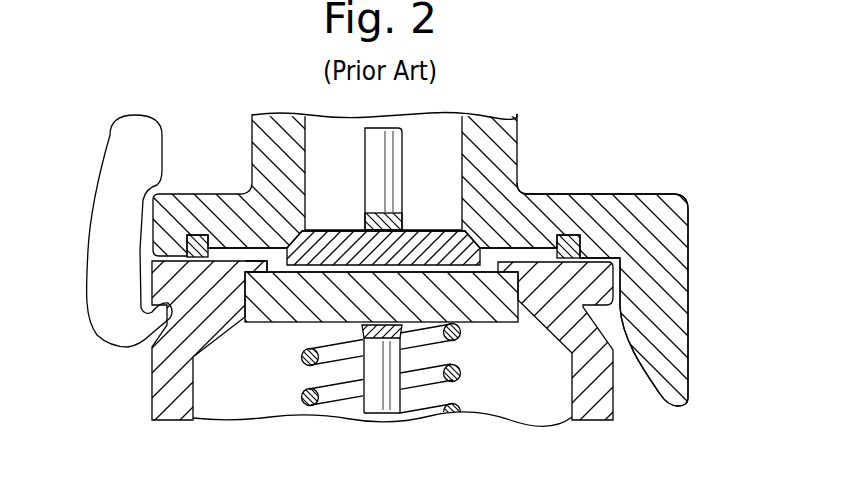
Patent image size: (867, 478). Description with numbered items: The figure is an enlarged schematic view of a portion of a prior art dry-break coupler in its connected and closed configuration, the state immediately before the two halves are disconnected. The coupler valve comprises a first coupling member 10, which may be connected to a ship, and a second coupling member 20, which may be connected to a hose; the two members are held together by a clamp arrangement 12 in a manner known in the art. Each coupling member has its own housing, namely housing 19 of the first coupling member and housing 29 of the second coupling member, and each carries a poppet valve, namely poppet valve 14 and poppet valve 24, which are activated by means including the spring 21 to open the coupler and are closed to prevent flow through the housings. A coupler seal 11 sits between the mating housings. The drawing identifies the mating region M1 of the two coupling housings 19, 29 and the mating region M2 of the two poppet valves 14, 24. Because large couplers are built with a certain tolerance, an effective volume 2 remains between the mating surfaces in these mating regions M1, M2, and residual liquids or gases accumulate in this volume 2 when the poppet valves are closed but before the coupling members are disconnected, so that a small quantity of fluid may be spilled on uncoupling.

The first coupling member 10 is at (528, 143).
The clamp arrangement 12 is at (88, 205).
The poppet valve 14 is at (430, 233).
The housing 19 is at (578, 214).
The coupler seal 11 is at (579, 247).
The mating region of the coupling housings M1 is at (230, 250).
The mating region of the poppet valves M2 is at (327, 268).
The volume 2 is at (277, 262).
The poppet valve 24 is at (497, 307).
The housing 29 is at (175, 382).
The spring 21 is at (427, 379).
The second coupling member 20 is at (630, 413).